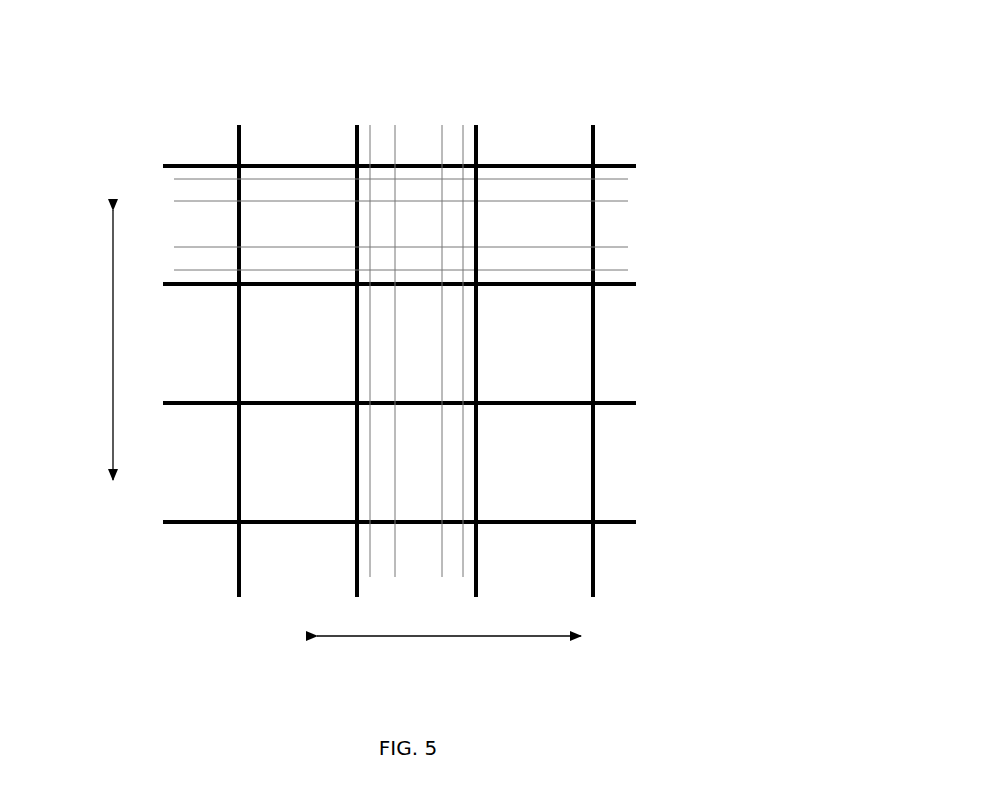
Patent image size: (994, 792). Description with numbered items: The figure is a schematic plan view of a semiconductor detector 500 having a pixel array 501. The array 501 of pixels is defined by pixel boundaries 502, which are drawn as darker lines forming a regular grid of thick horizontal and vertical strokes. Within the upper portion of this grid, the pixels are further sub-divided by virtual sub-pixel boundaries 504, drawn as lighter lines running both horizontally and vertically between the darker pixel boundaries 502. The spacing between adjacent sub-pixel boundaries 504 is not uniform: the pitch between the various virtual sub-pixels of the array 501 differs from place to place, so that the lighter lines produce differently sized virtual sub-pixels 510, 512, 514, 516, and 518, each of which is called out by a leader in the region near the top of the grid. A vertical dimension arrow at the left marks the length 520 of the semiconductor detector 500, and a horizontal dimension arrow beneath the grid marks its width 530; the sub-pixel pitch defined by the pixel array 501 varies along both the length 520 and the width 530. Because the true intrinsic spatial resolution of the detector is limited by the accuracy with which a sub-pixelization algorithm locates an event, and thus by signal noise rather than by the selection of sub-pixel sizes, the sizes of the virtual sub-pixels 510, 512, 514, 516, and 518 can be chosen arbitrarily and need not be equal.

The semiconductor detector 500 is at (501, 305).
The pixel array 501 is at (568, 99).
The pixel boundaries 502 is at (478, 138).
The virtual sub-pixel boundaries 504 is at (420, 248).
The virtual sub-pixel 510 is at (417, 220).
The virtual sub-pixel 512 is at (383, 190).
The virtual sub-pixel 514 is at (380, 227).
The virtual sub-pixel 516 is at (452, 173).
The virtual sub-pixel 518 is at (468, 172).
The length 520 is at (113, 345).
The width 530 is at (450, 636).